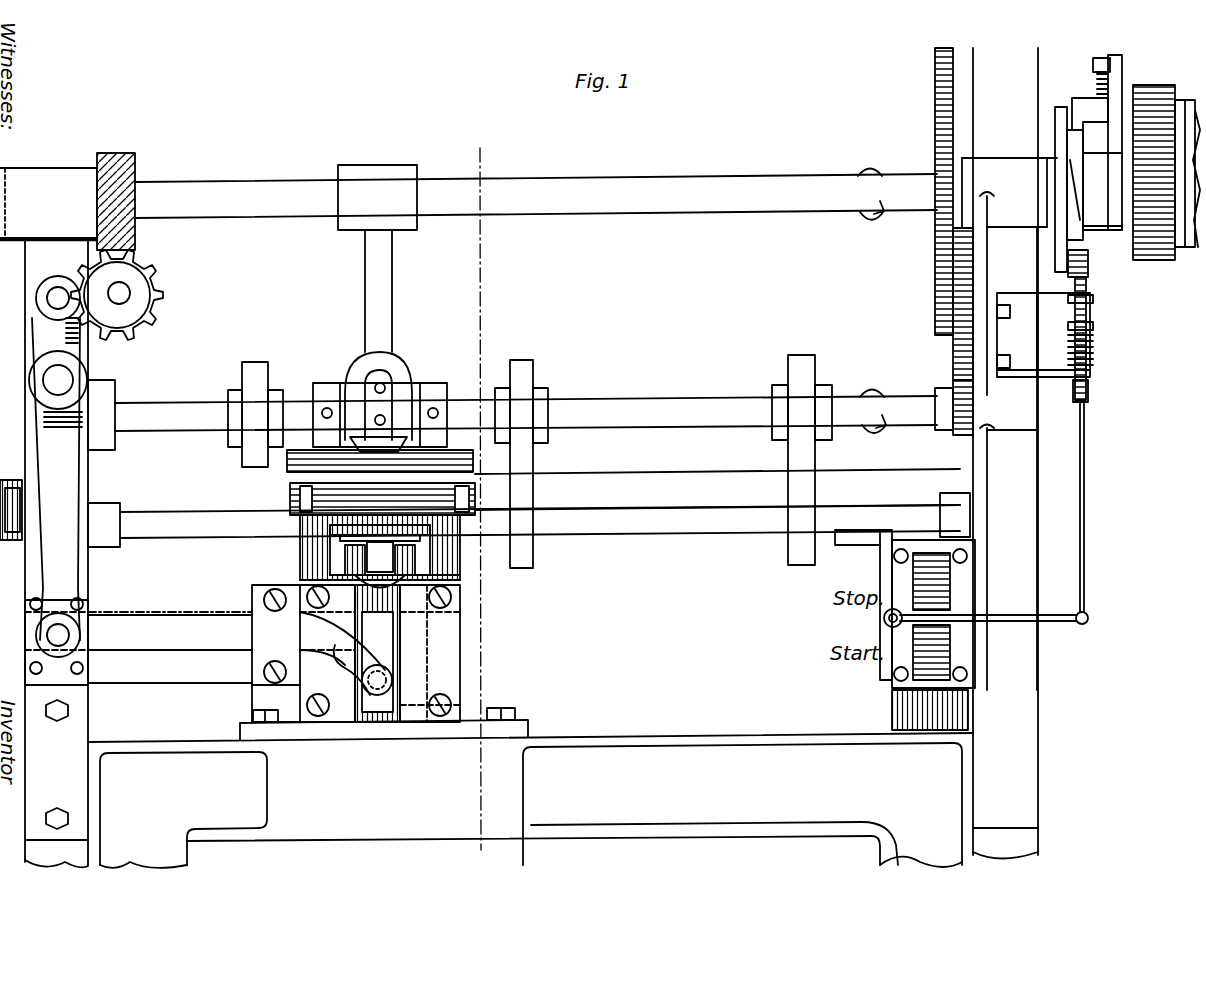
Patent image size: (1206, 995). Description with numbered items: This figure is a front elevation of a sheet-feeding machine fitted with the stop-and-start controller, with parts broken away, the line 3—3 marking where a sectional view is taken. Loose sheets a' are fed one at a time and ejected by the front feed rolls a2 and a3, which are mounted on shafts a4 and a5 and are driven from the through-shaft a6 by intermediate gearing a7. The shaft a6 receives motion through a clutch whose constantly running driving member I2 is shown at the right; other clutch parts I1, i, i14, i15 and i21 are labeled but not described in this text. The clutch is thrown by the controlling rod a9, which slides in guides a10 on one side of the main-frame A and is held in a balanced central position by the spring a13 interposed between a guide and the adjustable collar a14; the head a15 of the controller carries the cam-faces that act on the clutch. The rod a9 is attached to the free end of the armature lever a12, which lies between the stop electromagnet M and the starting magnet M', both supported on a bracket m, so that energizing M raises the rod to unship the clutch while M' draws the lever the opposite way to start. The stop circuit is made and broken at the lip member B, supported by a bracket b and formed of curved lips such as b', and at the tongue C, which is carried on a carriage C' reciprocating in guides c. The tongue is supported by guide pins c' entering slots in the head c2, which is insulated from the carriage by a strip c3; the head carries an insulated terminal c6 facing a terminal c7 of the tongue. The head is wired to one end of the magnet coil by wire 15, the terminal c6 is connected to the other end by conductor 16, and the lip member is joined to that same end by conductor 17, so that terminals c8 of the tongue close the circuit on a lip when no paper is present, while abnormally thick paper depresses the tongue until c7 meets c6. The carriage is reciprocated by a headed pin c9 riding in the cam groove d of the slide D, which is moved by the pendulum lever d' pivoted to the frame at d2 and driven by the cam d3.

The frame A is at (1035, 720).
The section line 3 is at (479, 494).
The through-shaft a6 is at (808, 181).
The cam d3 is at (117, 246).
The pendulum lever d' is at (57, 466).
The pivot d2 is at (60, 378).
The shaft a4 is at (688, 398).
The front feed roll a2 is at (255, 362).
The front feed roll a3 is at (240, 560).
The bracket b is at (384, 308).
The lip member B is at (305, 440).
The curved angular lip b' is at (394, 465).
The conductor 17 is at (285, 465).
The tongue C is at (337, 535).
The terminals of the tongue c8 is at (300, 535).
The guide pins c' is at (341, 515).
The terminal of the tongue c7 is at (362, 520).
The insulated terminal c6 is at (350, 544).
The head c2 is at (405, 548).
The wire 15 is at (425, 530).
The conductor 16 is at (315, 568).
The carriage C' is at (457, 575).
The strip of insulating material c3 is at (455, 585).
The guides or ways c is at (377, 653).
The cam groove d is at (346, 698).
The headed pin c9 is at (380, 680).
The reciprocating slide D is at (190, 650).
The shaft a5 is at (685, 518).
The loose sheets a' is at (717, 489).
The intermediate gearing a7 is at (935, 308).
The plate I1 is at (1053, 126).
The bracket i21 is at (1072, 98).
The plate i14 is at (1122, 70).
The nut i15 is at (1100, 58).
The driving member of the clutch I2 is at (1160, 140).
The hub i is at (1150, 235).
The head of the controller a15 is at (1088, 262).
The adjustable collar a14 is at (1093, 326).
The spring a13 is at (1093, 352).
The guides a10 is at (1055, 290).
The controlling rod a9 is at (1088, 392).
The armature lever a12 is at (1055, 621).
The stop electromagnet M is at (926, 630).
The starting magnet M' is at (986, 658).
The bracket m is at (910, 540).